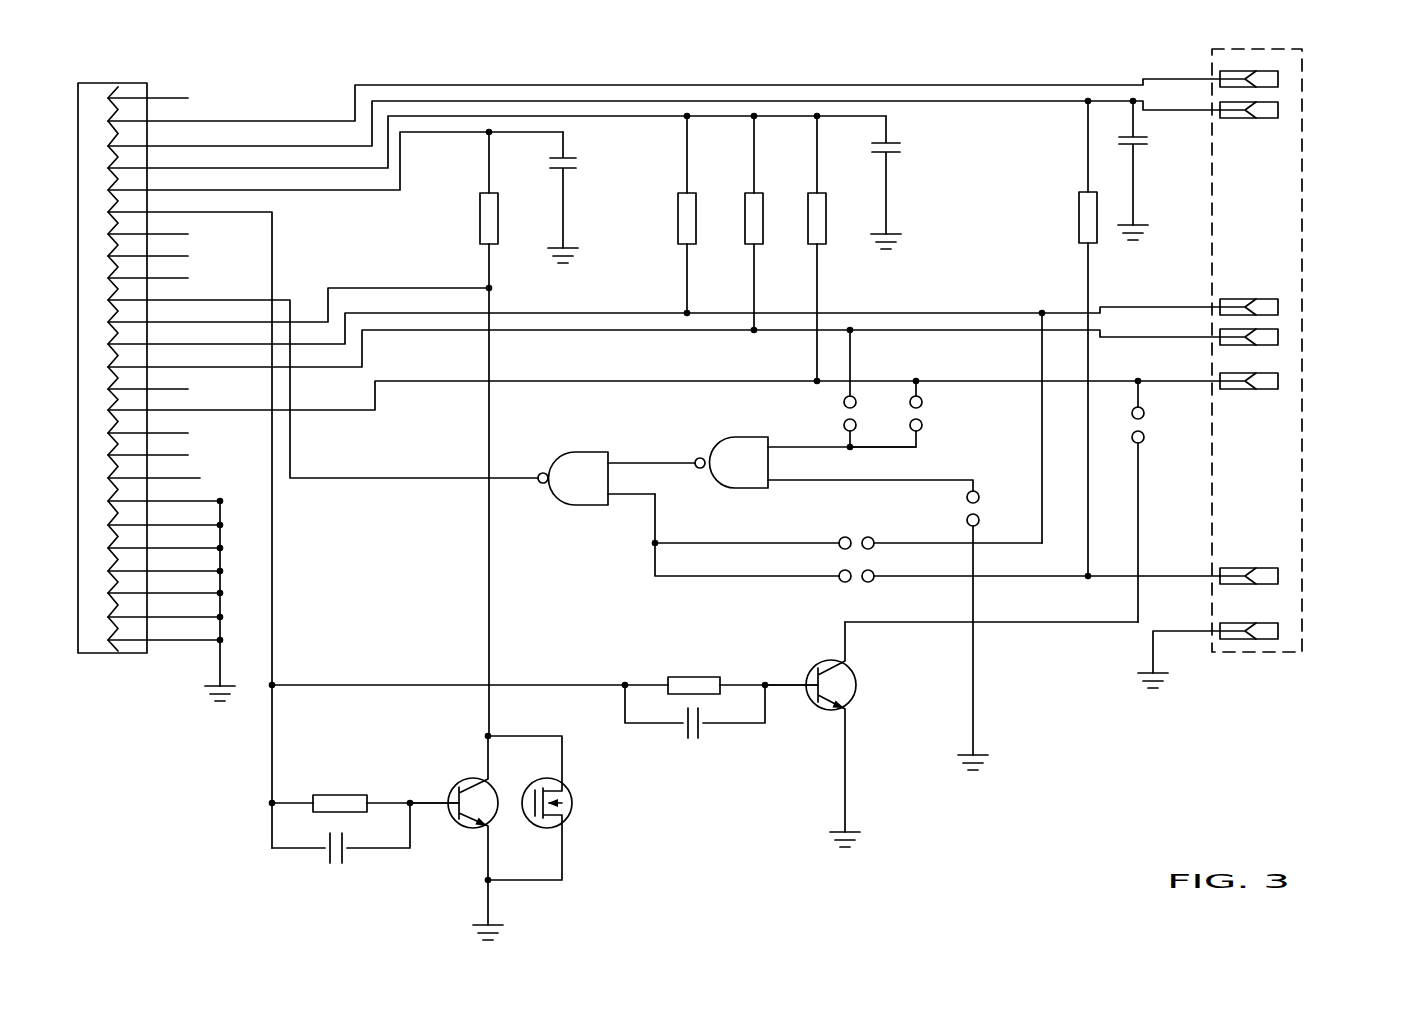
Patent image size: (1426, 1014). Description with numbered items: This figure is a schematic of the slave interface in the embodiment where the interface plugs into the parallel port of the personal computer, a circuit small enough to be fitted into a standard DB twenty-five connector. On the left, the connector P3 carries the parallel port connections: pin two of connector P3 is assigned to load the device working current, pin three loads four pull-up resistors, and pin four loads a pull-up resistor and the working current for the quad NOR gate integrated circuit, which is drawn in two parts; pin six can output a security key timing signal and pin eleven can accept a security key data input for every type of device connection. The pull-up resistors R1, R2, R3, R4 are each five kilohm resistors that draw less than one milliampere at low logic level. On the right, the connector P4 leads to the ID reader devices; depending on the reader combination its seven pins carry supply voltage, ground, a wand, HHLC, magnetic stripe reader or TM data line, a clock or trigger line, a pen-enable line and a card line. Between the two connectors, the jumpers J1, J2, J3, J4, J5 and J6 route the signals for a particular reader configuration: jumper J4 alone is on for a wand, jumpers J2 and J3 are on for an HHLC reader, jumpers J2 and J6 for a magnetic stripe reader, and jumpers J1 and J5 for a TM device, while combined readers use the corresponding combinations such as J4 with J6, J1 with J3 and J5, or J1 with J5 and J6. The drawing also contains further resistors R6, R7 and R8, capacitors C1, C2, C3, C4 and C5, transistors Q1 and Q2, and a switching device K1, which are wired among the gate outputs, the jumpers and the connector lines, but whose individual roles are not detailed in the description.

The connector P3 is at (97, 83).
The connector P4 is at (1270, 58).
The pull-up resistor R1 is at (475, 434).
The pull-up resistor R2 is at (674, 214).
The pull-up resistor R3 is at (741, 223).
The pull-up resistor R4 is at (804, 248).
The resistor R6 is at (1075, 338).
The resistor R7 is at (365, 792).
The resistor R8 is at (694, 673).
The capacitor C1 is at (1146, 170).
The capacitor C2 is at (900, 182).
The capacitor C3 is at (577, 197).
The capacitor C4 is at (341, 849).
The capacitor C5 is at (695, 726).
The jumper J1 is at (1149, 501).
The jumper J2 is at (884, 625).
The jumper J3 is at (848, 535).
The jumper J4 is at (861, 388).
The jumper J5 is at (897, 414).
The jumper J6 is at (937, 538).
The transistor Q1 is at (456, 838).
The transistor Q2 is at (812, 734).
The MOSFET / relay switch K1 is at (540, 808).